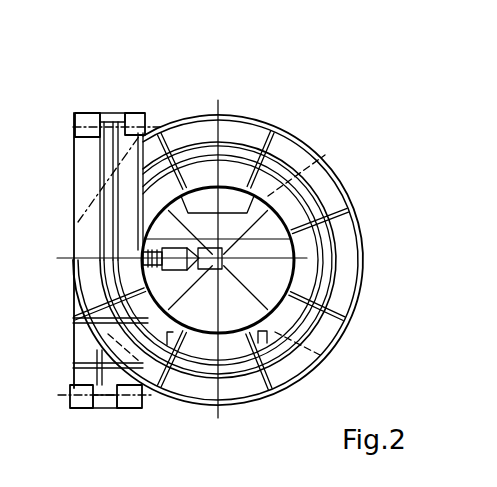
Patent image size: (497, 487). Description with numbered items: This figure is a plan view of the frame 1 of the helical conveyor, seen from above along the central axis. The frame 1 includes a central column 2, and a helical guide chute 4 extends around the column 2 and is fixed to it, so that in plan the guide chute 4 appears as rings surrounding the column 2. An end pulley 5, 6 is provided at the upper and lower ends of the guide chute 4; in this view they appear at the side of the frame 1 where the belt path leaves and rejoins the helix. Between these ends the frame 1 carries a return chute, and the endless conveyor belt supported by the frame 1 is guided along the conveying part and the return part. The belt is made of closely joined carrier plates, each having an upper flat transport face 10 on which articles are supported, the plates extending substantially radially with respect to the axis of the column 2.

The frame 1 is at (238, 105).
The central column 2 is at (205, 192).
The helical guide chute 4 is at (337, 207).
The end pulley 5 is at (90, 122).
The end pulley 6 is at (67, 388).
The upper flat transport face 10 is at (310, 190).